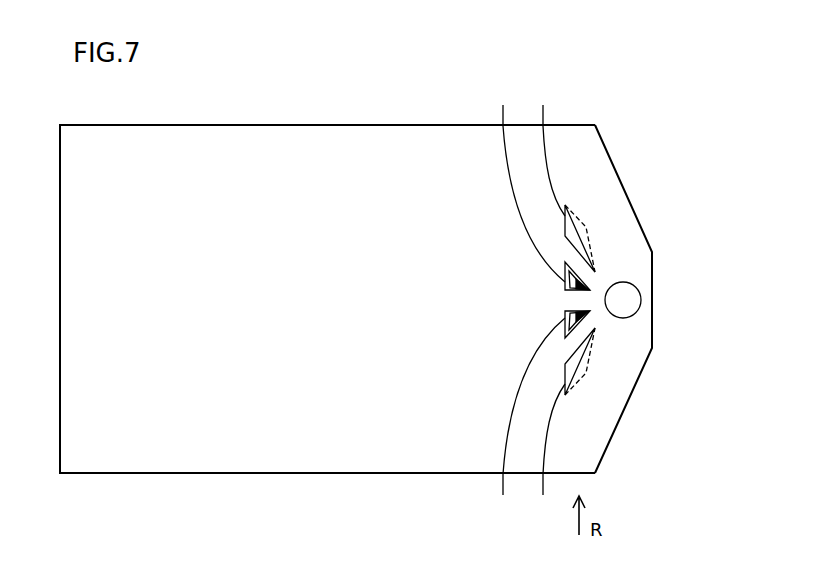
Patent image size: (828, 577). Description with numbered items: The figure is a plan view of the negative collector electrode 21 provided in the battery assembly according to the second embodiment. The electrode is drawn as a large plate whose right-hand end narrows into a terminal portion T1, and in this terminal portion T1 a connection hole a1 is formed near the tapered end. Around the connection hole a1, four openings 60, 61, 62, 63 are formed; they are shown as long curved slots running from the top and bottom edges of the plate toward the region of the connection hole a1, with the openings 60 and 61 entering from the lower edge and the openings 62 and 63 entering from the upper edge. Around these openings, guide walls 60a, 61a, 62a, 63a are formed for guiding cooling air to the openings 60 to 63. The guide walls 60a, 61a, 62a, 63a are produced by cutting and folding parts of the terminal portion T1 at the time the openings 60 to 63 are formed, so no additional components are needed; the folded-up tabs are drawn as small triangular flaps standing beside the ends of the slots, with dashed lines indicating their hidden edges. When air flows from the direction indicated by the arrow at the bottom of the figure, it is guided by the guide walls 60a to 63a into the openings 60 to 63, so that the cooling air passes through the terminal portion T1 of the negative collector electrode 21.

The negative collector electrode 21 is at (135, 125).
The terminal portion T1 is at (613, 388).
The opening 62 is at (529, 184).
The opening 63 is at (549, 151).
The opening 61 is at (529, 417).
The opening 60 is at (548, 450).
The guide wall 63a is at (587, 236).
The guide wall 62a is at (588, 278).
The connection hole a1 is at (632, 298).
The guide wall 61a is at (580, 322).
The guide wall 60a is at (590, 363).